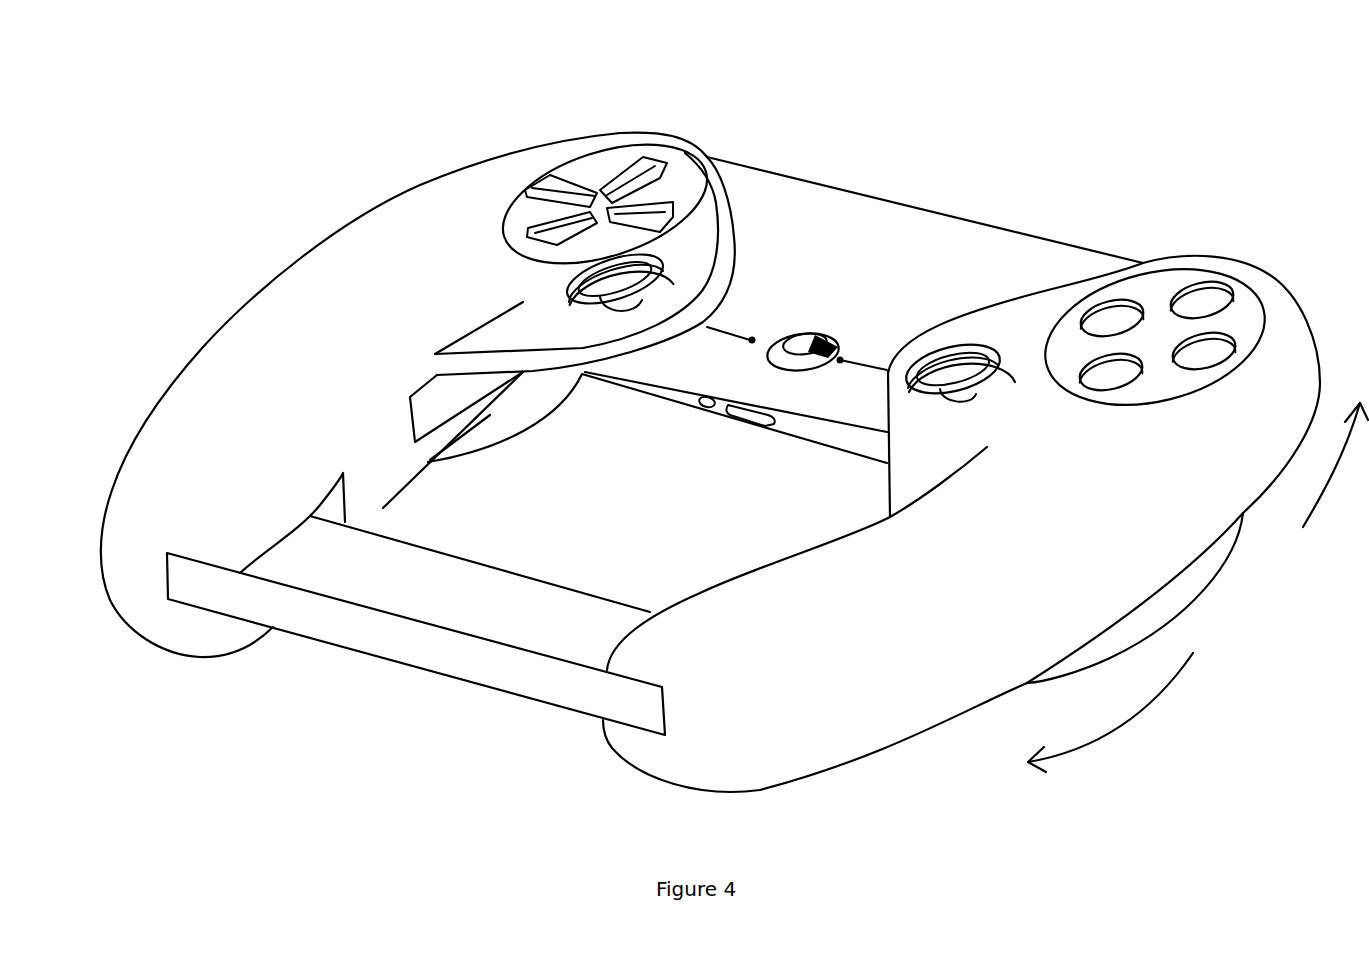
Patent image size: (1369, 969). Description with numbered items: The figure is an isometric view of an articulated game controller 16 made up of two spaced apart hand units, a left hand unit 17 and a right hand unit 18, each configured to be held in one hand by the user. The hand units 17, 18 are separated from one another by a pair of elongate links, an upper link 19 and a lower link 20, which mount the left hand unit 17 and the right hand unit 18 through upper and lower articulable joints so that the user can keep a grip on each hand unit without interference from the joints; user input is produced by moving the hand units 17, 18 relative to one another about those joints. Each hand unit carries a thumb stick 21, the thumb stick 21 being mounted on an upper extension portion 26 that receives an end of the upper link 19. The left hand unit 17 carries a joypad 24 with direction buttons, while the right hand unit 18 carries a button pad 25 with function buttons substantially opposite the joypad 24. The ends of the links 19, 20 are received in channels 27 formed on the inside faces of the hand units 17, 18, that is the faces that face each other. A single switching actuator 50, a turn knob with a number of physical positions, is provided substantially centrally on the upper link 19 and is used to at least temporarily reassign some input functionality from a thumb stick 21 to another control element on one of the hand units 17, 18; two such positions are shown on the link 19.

The articulated game controller 16 is at (293, 123).
The left hand unit 17 is at (240, 234).
The right hand unit 18 is at (1140, 560).
The upper link 19 is at (902, 238).
The lower link 20 is at (362, 662).
The thumb stick 21 is at (551, 294).
The joypad 24 is at (571, 160).
The button pad 25 is at (1164, 286).
The upper extension portion 26 is at (722, 238).
The channel 27 is at (345, 506).
The switching actuator 50 is at (796, 385).